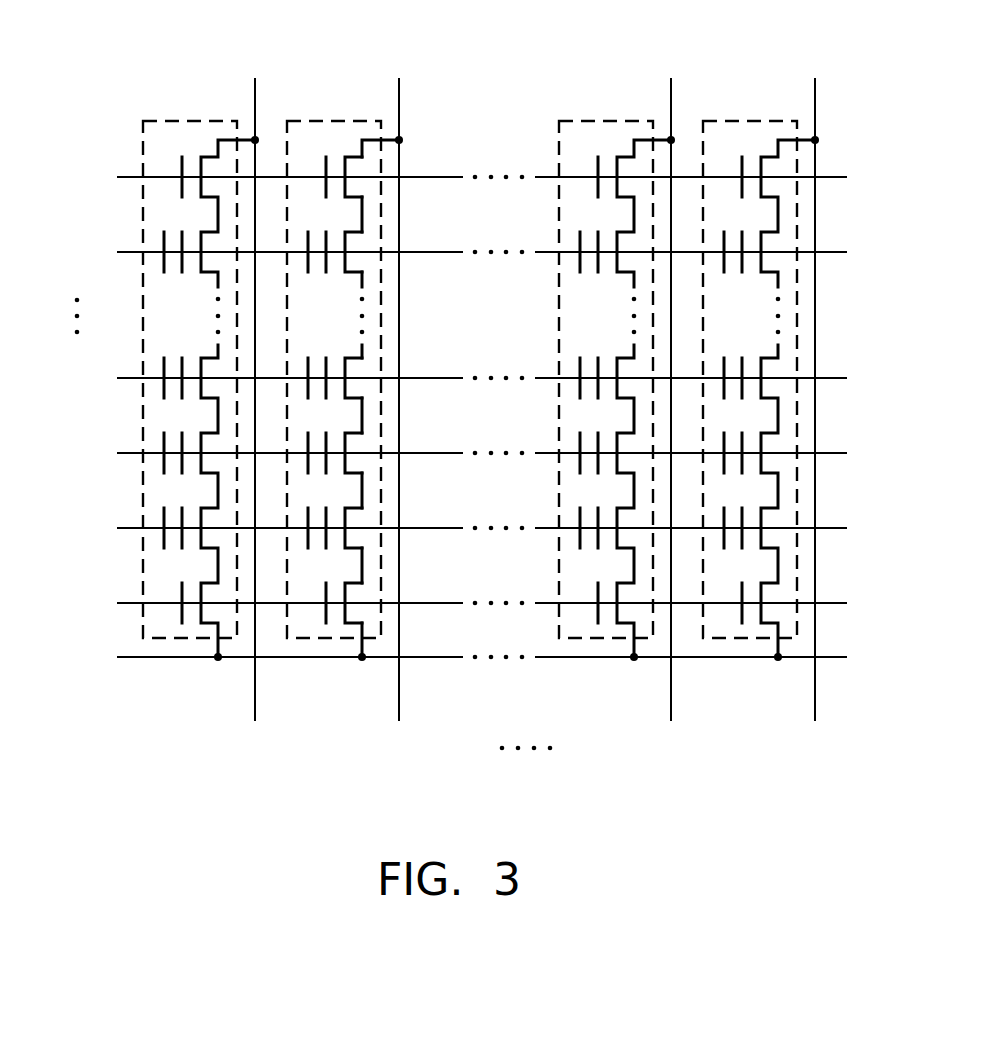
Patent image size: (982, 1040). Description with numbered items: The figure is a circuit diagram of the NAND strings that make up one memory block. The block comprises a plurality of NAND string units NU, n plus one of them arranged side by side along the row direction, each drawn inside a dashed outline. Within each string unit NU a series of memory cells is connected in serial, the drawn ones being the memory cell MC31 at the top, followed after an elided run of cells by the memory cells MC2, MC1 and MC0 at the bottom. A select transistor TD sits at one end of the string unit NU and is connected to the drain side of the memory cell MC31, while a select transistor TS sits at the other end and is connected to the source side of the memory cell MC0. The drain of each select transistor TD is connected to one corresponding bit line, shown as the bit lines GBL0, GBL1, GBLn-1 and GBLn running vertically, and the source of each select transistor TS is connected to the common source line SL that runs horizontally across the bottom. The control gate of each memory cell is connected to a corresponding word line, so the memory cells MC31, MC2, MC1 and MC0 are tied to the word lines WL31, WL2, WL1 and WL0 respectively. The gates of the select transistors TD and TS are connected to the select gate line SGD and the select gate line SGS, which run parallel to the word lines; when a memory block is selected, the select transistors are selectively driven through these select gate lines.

The NAND string unit NU is at (470, 330).
The select transistor TD is at (358, 186).
The select transistor TS is at (358, 612).
The memory cell MC31 is at (358, 261).
The memory cell MC2 is at (358, 387).
The memory cell MC1 is at (358, 462).
The memory cell MC0 is at (358, 537).
The select gate line SGD is at (452, 179).
The select gate line SGS is at (453, 605).
The word line WL31 is at (443, 254).
The word line WL2 is at (451, 380).
The word line WL1 is at (451, 455).
The word line WL0 is at (451, 530).
The common source line SL is at (463, 659).
The bit line GBL0 is at (255, 423).
The bit line GBL1 is at (399, 423).
The bit line GBLn-1 is at (670, 423).
The bit line GBLn is at (815, 423).